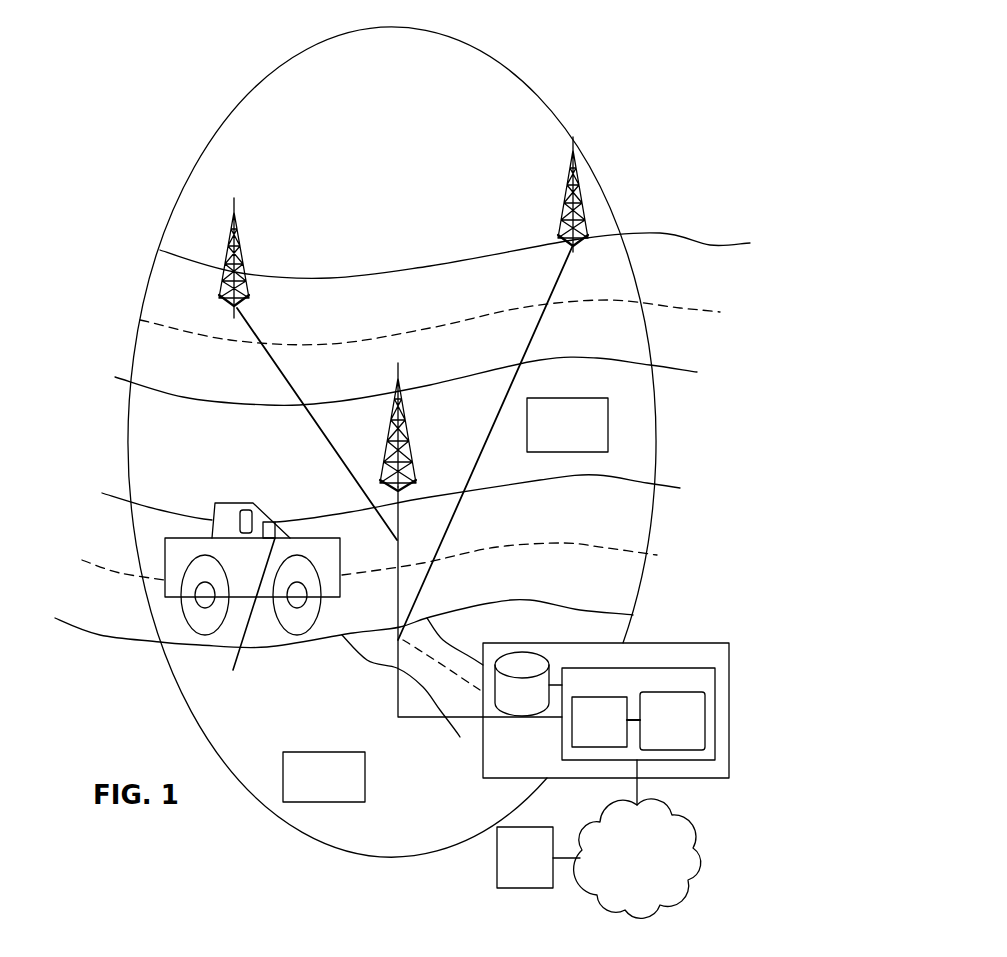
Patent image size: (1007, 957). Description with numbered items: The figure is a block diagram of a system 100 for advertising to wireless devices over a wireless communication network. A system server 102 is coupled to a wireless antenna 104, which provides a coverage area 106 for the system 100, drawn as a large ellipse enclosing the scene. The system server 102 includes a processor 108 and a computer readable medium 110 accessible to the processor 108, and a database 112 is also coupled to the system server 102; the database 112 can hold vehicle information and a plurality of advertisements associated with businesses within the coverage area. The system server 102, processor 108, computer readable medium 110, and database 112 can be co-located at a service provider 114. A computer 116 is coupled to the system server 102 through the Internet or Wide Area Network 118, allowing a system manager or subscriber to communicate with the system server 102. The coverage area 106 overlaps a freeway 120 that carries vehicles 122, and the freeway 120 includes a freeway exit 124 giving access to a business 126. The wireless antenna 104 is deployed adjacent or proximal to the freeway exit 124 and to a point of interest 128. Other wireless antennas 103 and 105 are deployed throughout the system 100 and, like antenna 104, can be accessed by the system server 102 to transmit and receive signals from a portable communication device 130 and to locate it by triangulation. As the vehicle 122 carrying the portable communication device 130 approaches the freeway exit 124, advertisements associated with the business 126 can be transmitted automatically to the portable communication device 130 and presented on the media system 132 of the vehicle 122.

The system 100 is at (623, 182).
The system server 102 is at (675, 720).
The wireless antenna 103 is at (257, 258).
The wireless antenna 104 is at (439, 427).
The wireless antenna 105 is at (546, 194).
The coverage area 106 is at (392, 442).
The processor 108 is at (542, 757).
The computer readable medium 110 is at (714, 767).
The database 112 is at (472, 718).
The service provider 114 is at (611, 690).
The computer 116 is at (493, 867).
The Internet or Wide Area Network 118 is at (681, 860).
The freeway 120 is at (329, 636).
The vehicle 122 is at (240, 558).
The freeway exit 124 is at (390, 677).
The business 126 is at (299, 756).
The point of interest 128 is at (616, 417).
The portable communication device 130 is at (298, 504).
The media system 132 is at (227, 613).